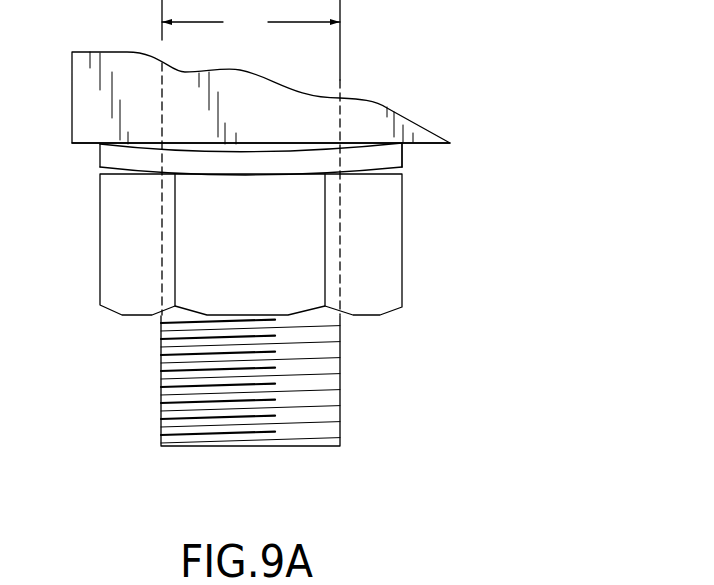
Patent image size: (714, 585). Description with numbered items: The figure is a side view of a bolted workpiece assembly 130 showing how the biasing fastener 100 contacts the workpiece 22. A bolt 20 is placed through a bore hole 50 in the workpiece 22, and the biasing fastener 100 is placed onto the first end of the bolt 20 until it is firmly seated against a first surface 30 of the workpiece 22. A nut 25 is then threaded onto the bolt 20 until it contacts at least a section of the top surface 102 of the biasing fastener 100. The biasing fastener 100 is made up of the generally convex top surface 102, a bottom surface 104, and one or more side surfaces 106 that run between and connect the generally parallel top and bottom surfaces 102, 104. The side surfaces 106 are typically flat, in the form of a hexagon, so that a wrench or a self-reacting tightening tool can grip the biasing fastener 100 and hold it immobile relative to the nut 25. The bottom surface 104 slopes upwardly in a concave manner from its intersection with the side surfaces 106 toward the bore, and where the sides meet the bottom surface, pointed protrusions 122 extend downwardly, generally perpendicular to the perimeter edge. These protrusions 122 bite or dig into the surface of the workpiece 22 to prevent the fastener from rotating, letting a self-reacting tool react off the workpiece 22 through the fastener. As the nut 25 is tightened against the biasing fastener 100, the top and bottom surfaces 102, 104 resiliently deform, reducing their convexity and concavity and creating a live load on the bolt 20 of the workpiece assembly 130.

The bolt 20 is at (323, 397).
The workpiece 22 is at (349, 316).
The nut 25 is at (385, 228).
The first surface 30 is at (80, 145).
The bore hole 50 is at (251, 40).
The biasing fastener 100 is at (279, 175).
The top surface 102 is at (402, 168).
The bottom surface 104 is at (318, 153).
The side surfaces 106 is at (452, 143).
The pointed protrusions 122 is at (100, 144).
The workpiece assembly 130 is at (325, 173).